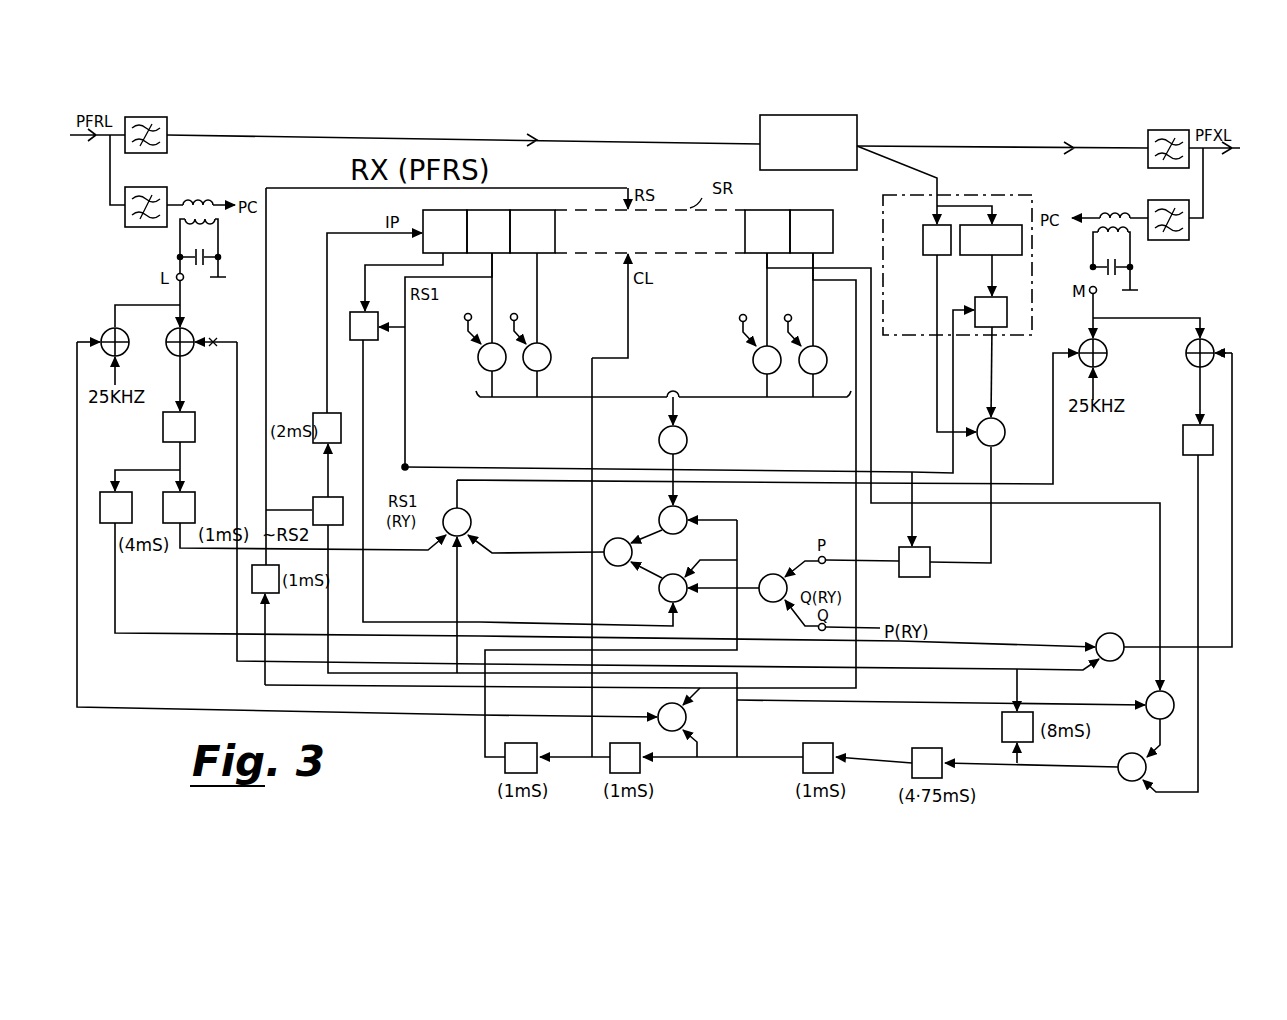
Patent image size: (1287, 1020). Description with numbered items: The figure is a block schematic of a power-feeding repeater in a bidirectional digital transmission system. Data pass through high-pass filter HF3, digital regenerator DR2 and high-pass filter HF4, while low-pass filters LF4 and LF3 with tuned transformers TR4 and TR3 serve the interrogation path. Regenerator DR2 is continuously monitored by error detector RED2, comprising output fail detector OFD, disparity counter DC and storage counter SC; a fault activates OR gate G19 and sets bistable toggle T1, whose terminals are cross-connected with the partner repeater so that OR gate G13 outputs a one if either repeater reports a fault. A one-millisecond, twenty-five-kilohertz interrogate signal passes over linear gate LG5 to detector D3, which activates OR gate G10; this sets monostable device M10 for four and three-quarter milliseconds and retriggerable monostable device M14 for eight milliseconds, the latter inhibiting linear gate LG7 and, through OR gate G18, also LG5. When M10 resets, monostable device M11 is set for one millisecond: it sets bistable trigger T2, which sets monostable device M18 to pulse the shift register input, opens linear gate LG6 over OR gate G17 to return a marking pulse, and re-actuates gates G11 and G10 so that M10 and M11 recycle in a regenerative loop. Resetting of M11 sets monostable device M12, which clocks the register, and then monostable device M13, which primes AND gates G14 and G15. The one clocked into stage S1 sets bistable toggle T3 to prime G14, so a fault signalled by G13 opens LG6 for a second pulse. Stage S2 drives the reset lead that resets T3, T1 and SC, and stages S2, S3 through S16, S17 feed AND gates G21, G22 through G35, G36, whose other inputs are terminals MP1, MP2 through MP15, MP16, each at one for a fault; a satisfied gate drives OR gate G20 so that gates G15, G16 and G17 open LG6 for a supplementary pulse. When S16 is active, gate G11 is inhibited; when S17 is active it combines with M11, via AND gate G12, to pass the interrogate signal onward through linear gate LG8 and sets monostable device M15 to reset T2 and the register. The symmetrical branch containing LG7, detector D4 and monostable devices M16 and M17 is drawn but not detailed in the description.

The high-pass filter HF3 is at (146, 125).
The low-pass filter LF4 is at (146, 197).
The tuned transformer TR4 is at (201, 230).
The linear gate LG8 is at (103, 351).
The linear gate LG7 is at (201, 336).
The detector D4 is at (179, 399).
The monostable (4 ms) M16 is at (116, 507).
The monostable (1 ms) M17 is at (179, 507).
The monostable device M18 is at (327, 428).
The monostable device M15 is at (266, 625).
The bistable trigger device T2 is at (328, 484).
The bistable toggle device T3 is at (396, 296).
The bistable toggle T1 is at (914, 562).
The first stage of shift register S1 is at (445, 231).
The shift register stage S2 is at (488, 231).
The shift register stage S3 is at (532, 231).
The shift register stage S16 is at (767, 231).
The shift register stage S17 is at (811, 231).
The terminal MP1 is at (469, 318).
The terminal MP2 is at (514, 318).
The terminal MP15 is at (746, 319).
The terminal MP16 is at (790, 319).
The AND gate G21 is at (480, 366).
The AND gate G22 is at (543, 372).
The AND gate G35 is at (753, 366).
The AND gate G36 is at (820, 372).
The OR gate G20 is at (691, 425).
The AND gate G15 is at (698, 494).
The gate G16 is at (629, 545).
The AND gate G14 is at (709, 596).
The OR gate G13 is at (788, 591).
The OR gate G17 is at (477, 521).
The OR gate G19 is at (987, 350).
The OR gate G18 is at (1109, 636).
The gate G11 is at (970, 698).
The OR gate G10 is at (1153, 750).
The AND gate G12 is at (691, 730).
The monostable device M10 is at (1015, 763).
The monostable device M11 is at (857, 758).
The monostable device M12 is at (706, 758).
The monostable device M13 is at (557, 758).
The retriggerable monostable device M14 is at (1017, 716).
The digital regenerator DR2 is at (808, 142).
The regenerator error detector RED2 is at (957, 265).
The output fail detector OFD is at (937, 240).
The disparity counter DC is at (991, 240).
The storage counter SC is at (991, 291).
The high-pass filter HF4 is at (1168, 139).
The low-pass filter LF3 is at (1168, 210).
The tuned transformer TR3 is at (1110, 241).
The linear gate LG6 is at (1078, 363).
The linear gate LG5 is at (1213, 347).
The detector D3 is at (1198, 411).